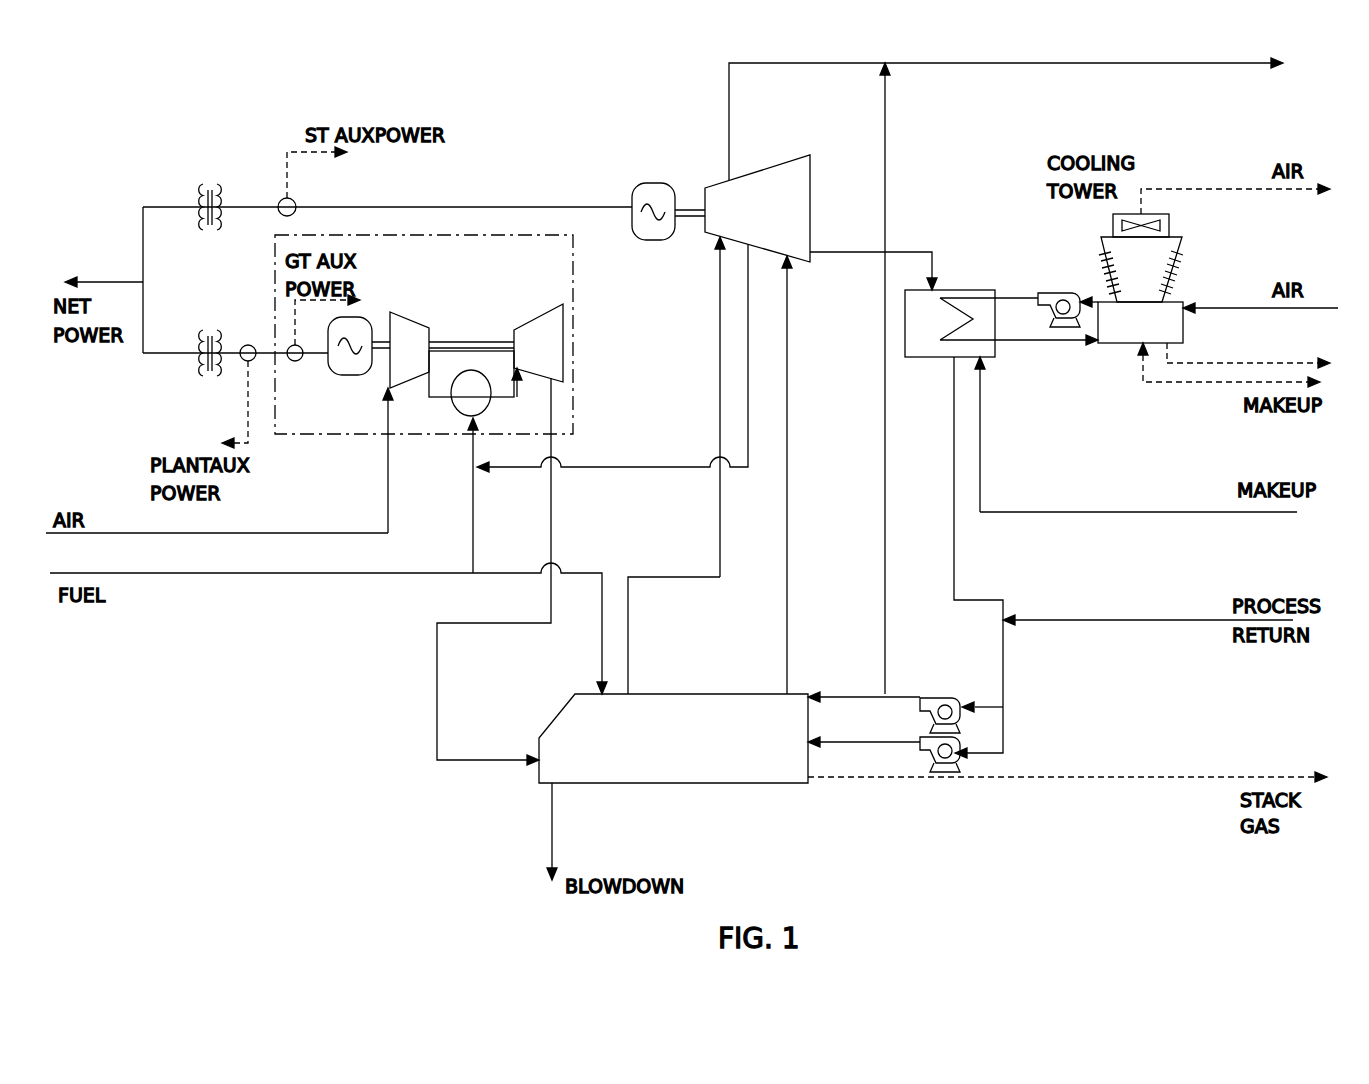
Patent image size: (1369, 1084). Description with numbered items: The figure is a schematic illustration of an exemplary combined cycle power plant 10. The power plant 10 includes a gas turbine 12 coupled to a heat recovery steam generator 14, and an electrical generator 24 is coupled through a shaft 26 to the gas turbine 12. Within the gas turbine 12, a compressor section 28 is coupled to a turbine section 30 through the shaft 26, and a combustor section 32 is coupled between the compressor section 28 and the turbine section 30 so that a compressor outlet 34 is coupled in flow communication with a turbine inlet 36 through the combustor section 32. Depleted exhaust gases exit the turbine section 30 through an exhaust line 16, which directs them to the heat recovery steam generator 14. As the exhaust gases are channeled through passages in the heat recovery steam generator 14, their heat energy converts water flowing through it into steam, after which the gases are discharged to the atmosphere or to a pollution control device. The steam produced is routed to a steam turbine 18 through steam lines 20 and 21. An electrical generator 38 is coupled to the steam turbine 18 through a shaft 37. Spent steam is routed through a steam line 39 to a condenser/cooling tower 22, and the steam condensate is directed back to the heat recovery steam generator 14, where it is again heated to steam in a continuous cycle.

The combined cycle power plant 10 is at (465, 76).
The gas turbine 12 is at (490, 250).
The heat recovery steam generator 14 is at (655, 783).
The exhaust line 16 is at (437, 700).
The steam turbine 18 is at (812, 202).
The steam line 20 is at (793, 385).
The steam line 21 is at (720, 372).
The condenser/cooling tower 22 is at (1010, 275).
The electrical generator 24 is at (348, 375).
The shaft 26 is at (377, 345).
The compressor section 28 is at (405, 312).
The turbine section 30 is at (540, 313).
The combustor section 32 is at (455, 410).
The compressor outlet 34 is at (428, 387).
The turbine inlet 36 is at (500, 398).
The shaft 37 is at (687, 220).
The electrical generator 38 is at (653, 183).
The steam line 39 is at (955, 565).